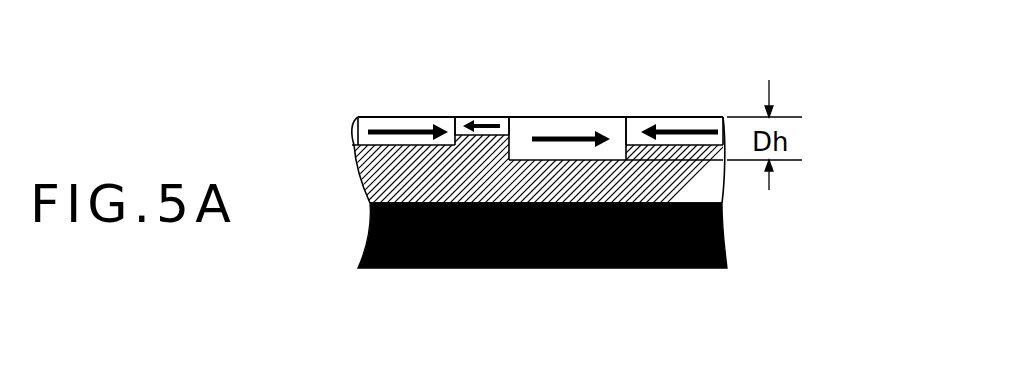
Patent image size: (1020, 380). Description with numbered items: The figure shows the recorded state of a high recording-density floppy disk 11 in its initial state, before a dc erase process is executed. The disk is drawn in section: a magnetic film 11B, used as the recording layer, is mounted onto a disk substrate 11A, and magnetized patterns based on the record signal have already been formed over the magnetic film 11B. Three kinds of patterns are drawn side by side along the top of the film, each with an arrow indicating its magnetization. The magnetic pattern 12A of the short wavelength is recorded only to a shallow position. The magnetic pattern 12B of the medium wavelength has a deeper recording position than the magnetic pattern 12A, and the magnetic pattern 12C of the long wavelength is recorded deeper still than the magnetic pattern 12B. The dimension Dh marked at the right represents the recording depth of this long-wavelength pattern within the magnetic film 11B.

The floppy disk 11 is at (569, 232).
The disk substrate 11A is at (727, 248).
The magnetic film 11B is at (725, 193).
The magnetic pattern of the short wavelength 12A is at (483, 115).
The magnetic pattern of the medium wavelength 12B is at (400, 115).
The magnetic pattern of the long wavelength 12C is at (577, 115).